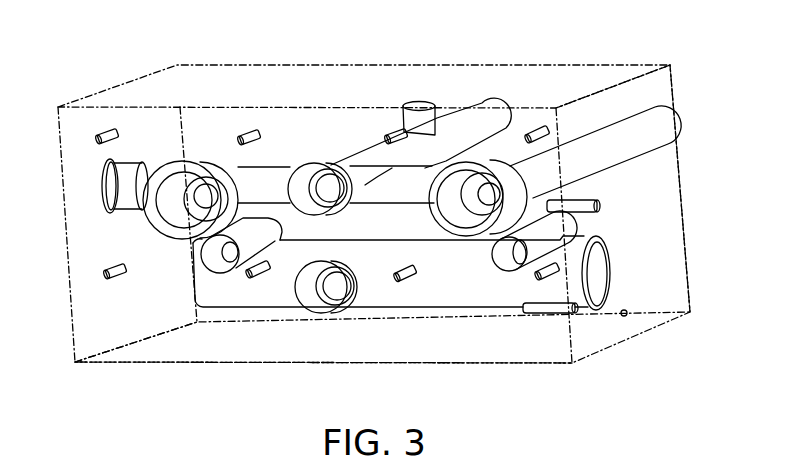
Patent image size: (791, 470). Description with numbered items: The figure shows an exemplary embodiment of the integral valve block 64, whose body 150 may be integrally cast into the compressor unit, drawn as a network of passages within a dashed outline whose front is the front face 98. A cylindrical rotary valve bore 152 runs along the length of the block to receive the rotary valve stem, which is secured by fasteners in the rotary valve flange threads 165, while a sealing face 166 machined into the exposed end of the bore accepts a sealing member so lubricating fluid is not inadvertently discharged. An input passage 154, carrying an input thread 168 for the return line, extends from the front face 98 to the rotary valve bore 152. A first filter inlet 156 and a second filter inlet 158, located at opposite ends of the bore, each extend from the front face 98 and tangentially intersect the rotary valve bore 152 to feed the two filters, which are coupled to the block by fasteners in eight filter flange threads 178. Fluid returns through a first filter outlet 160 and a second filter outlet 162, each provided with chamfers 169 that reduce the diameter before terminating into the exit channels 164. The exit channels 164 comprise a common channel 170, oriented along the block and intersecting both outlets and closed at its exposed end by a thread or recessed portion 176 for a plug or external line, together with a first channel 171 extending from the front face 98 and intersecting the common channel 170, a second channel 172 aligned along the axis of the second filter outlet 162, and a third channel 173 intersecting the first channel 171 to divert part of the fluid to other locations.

The integral valve block 64 is at (650, 97).
The front face 98 is at (225, 121).
The body 150 is at (202, 346).
The rotary valve bore 152 is at (407, 298).
The input passage 154 is at (322, 313).
The first filter inlet 156 is at (193, 260).
The second filter inlet 158 is at (490, 253).
The first filter outlet 160 is at (157, 236).
The second filter outlet 162 is at (431, 210).
The exit channels 164 is at (296, 157).
The rotary valve flange threads 165 is at (594, 207).
The sealing face 166 is at (610, 258).
The input thread 168 is at (308, 290).
The chamfers 169 is at (177, 186).
The common channel 170 is at (252, 178).
The first channel 171 is at (361, 157).
The second channel 172 is at (630, 147).
The third channel 173 is at (434, 114).
The thread or recessed portion 176 is at (121, 199).
The filter flange threads 178 is at (100, 132).